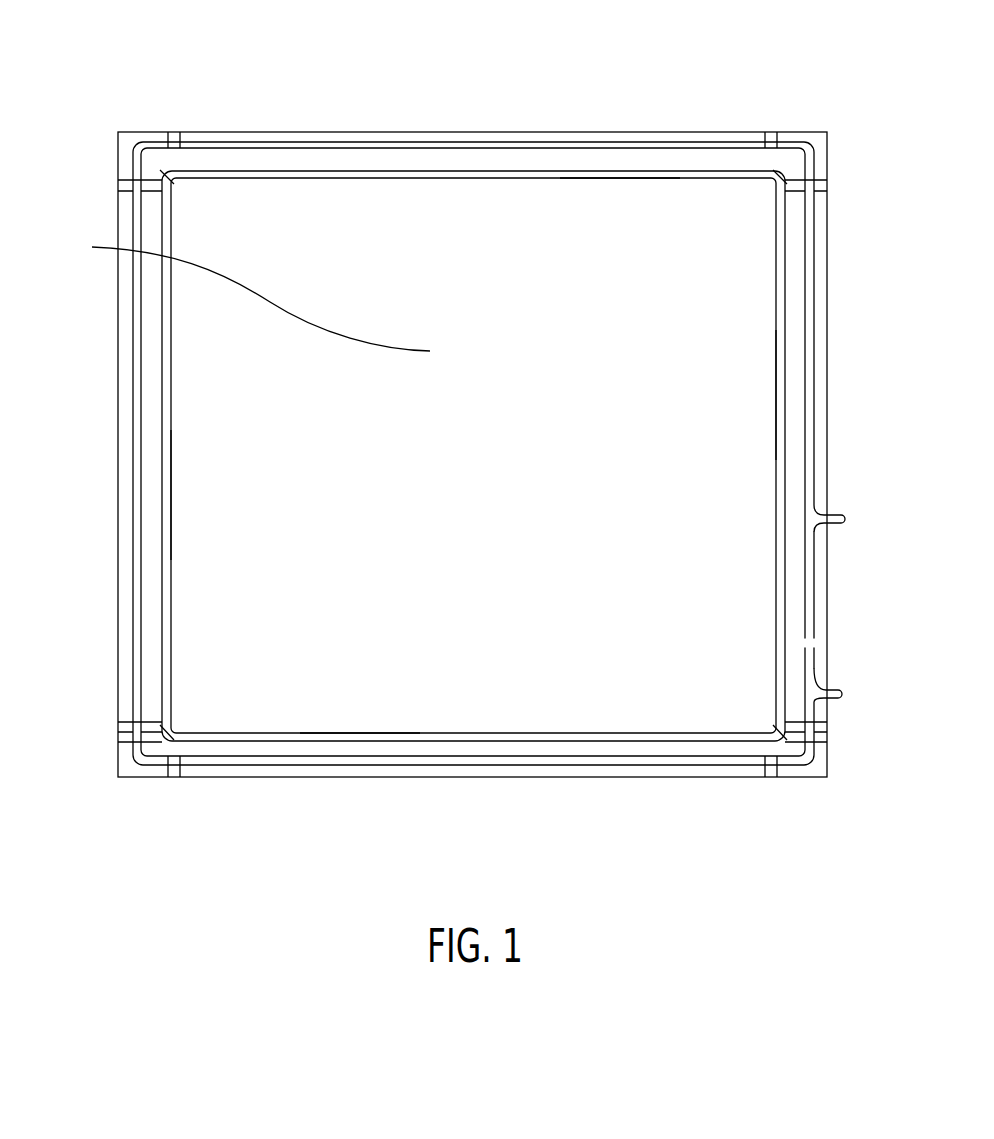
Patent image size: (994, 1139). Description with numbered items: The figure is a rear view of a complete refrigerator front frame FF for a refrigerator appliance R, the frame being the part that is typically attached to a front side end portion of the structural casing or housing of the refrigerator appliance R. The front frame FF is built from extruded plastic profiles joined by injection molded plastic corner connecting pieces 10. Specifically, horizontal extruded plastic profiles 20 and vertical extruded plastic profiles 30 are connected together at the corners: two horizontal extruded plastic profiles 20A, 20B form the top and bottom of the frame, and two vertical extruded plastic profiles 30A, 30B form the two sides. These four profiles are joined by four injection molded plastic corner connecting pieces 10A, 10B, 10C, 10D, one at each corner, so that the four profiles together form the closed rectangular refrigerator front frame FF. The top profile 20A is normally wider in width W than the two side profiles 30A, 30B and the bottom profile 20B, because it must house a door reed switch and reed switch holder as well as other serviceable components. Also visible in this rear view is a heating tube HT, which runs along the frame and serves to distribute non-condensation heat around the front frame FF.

The injection molded plastic corner connecting piece 10 is at (124, 160).
The injection molded plastic corner connecting piece 10A is at (157, 132).
The injection molded plastic corner connecting piece 10B is at (812, 132).
The injection molded plastic corner connecting piece 10C is at (830, 760).
The injection molded plastic corner connecting piece 10D is at (119, 760).
The horizontal extruded plastic profile 20 is at (594, 132).
The top horizontal extruded plastic profile 20A is at (618, 186).
The bottom horizontal extruded plastic profile 20B is at (362, 733).
The vertical extruded plastic profile 30 is at (121, 428).
The vertical extruded plastic profile 30A is at (172, 494).
The vertical extruded plastic profile 30B is at (776, 393).
The refrigerator appliance R is at (253, 292).
The refrigerator front frame FF is at (355, 90).
The width W is at (728, 196).
The heating tube HT is at (828, 258).